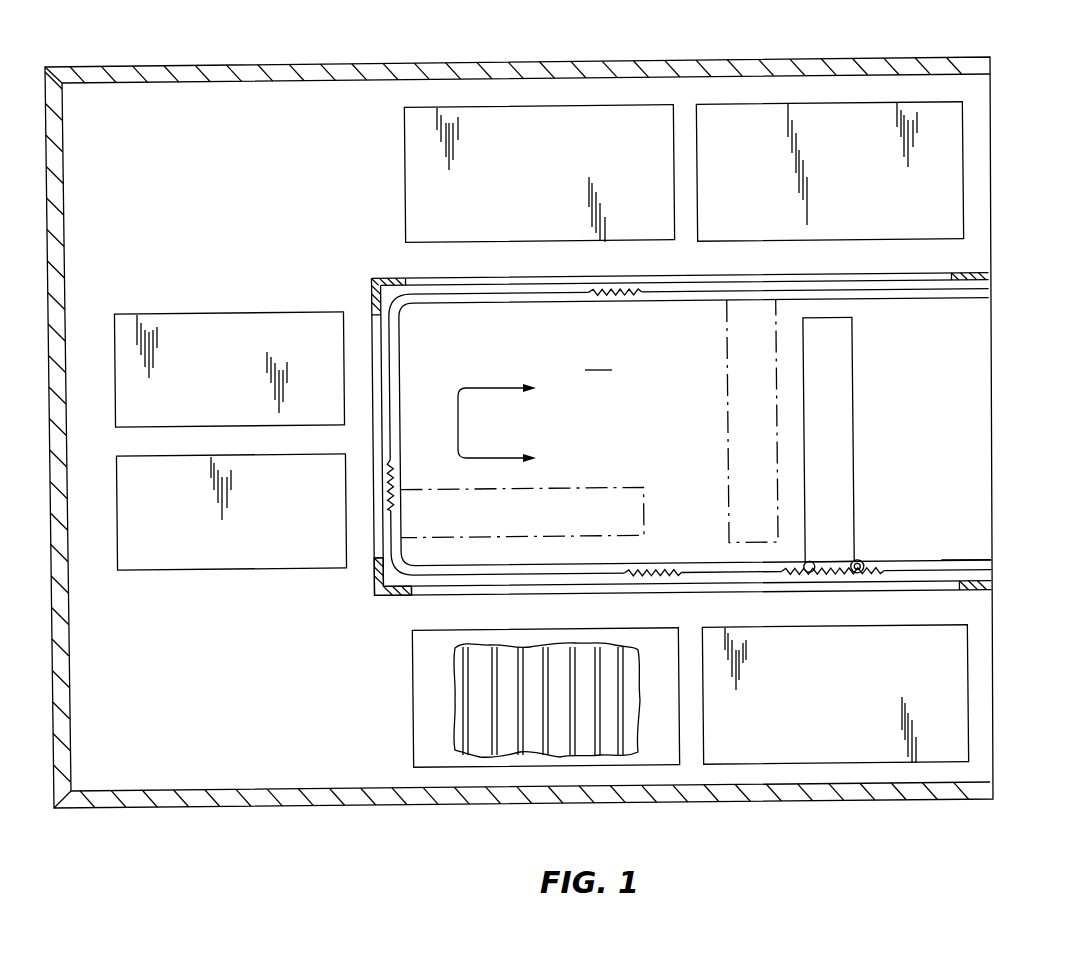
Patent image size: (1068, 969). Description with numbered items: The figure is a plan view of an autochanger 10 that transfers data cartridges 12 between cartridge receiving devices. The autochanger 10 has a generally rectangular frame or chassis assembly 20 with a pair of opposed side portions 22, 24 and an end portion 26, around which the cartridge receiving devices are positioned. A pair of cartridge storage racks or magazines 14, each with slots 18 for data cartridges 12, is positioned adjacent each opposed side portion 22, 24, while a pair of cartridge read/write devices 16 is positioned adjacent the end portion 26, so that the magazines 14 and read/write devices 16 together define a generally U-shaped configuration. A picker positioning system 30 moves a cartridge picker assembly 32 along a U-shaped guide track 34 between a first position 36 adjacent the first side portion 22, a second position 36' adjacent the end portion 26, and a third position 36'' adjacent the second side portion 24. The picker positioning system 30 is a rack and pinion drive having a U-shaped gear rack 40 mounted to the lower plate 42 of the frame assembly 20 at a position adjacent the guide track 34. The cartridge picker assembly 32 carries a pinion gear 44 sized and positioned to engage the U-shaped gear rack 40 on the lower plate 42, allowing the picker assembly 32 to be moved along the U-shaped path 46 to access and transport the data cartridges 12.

The autochanger 10 is at (146, 60).
The data cartridge 12 is at (858, 776).
The cartridge storage rack or magazine 14 is at (716, 102).
The cartridge read/write device 16 is at (148, 427).
The slot 18 is at (508, 740).
The frame or chassis assembly 20 is at (683, 434).
The first side portion 22 is at (945, 591).
The second side portion 24 is at (937, 273).
The end portion 26 is at (374, 590).
The picker positioning system 30 is at (975, 548).
The cartridge picker assembly 32 is at (689, 432).
The U-shaped guide track 34 is at (402, 349).
The first position 36 is at (858, 439).
The second position 36' is at (522, 485).
The third position 36'' is at (723, 421).
The U-shaped gear rack 40 is at (655, 572).
The lower plate 42 is at (598, 358).
The pinion gear 44 is at (856, 562).
The U-shaped path 46 is at (458, 423).